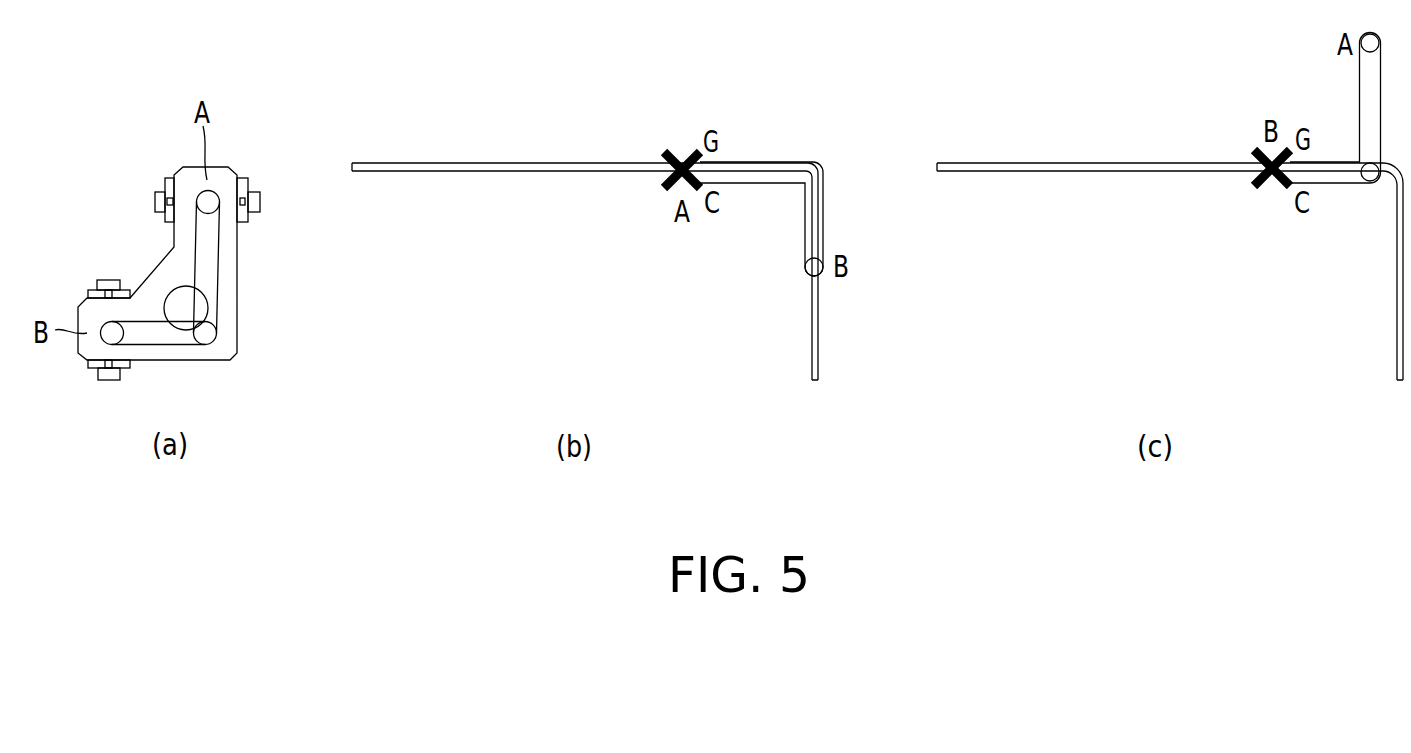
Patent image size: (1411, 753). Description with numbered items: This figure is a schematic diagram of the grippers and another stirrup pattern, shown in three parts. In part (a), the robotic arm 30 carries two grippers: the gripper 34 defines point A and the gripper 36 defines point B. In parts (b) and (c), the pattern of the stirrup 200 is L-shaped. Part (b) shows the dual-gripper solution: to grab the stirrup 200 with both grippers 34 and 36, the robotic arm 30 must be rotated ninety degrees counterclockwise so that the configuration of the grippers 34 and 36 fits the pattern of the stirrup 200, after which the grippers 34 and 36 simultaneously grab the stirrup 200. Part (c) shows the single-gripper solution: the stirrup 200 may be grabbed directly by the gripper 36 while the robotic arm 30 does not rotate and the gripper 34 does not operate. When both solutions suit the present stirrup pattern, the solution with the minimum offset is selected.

The robotic arm 30 is at (233, 269).
The gripper 34 is at (168, 180).
The gripper 36 is at (109, 282).
The stirrup 200 is at (500, 165).